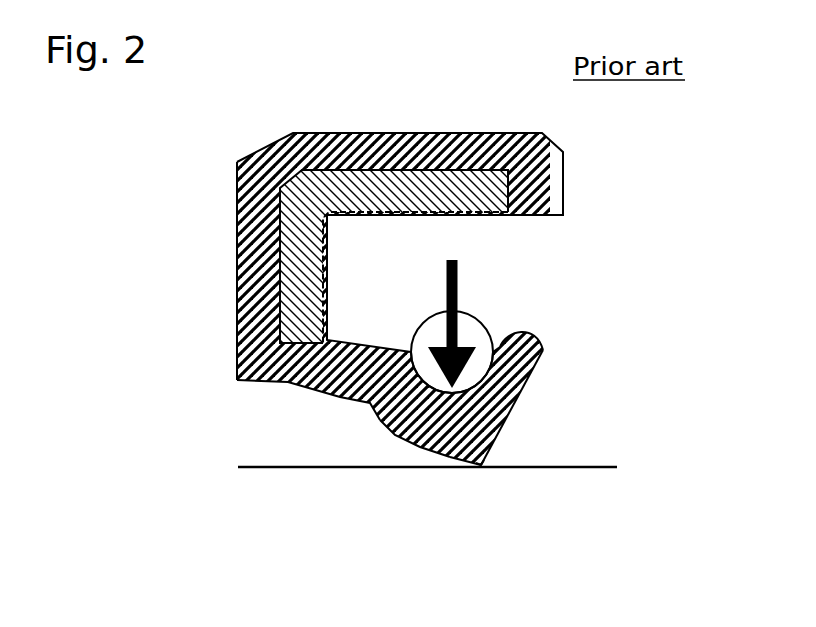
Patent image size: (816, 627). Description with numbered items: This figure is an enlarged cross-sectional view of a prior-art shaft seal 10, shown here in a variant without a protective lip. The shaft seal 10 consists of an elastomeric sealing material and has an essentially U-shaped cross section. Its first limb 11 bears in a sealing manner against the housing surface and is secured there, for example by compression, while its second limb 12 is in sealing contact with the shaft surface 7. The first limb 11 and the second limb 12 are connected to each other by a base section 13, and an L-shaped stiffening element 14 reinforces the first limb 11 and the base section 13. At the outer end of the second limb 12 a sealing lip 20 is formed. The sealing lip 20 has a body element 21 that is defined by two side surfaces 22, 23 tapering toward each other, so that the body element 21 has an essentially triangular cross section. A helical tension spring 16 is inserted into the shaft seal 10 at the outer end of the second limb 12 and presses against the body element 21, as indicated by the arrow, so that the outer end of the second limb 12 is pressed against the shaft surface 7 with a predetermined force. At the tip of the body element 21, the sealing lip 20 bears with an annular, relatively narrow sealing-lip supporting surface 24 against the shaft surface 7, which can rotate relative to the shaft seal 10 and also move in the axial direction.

The shaft surface 7 is at (358, 463).
The shaft seal 10 is at (397, 309).
The first limb 11 is at (393, 150).
The second limb 12 is at (342, 378).
The base section 13 is at (258, 274).
The L-shaped stiffening element 14 is at (445, 190).
The helical tension spring 16 is at (474, 328).
The sealing lip 20 is at (492, 408).
The body element 21 is at (452, 453).
The side surface 22 is at (432, 452).
The side surface 23 is at (500, 434).
The sealing-lip supporting surface 24 is at (481, 466).